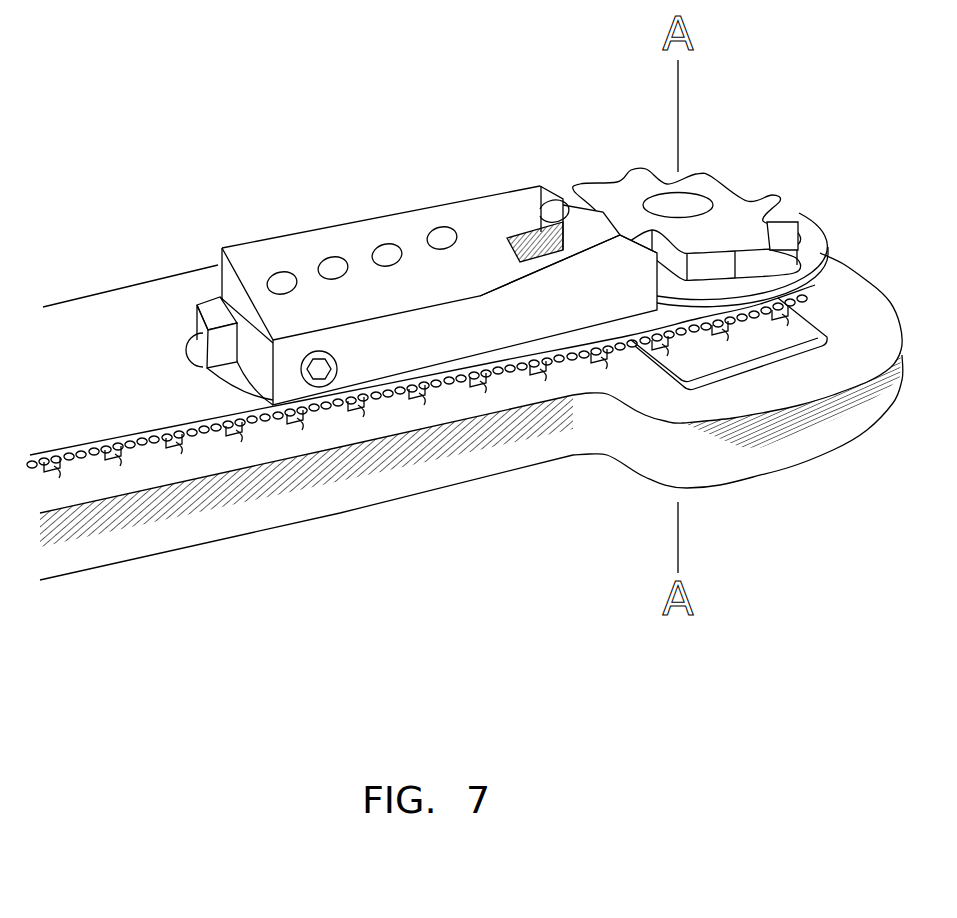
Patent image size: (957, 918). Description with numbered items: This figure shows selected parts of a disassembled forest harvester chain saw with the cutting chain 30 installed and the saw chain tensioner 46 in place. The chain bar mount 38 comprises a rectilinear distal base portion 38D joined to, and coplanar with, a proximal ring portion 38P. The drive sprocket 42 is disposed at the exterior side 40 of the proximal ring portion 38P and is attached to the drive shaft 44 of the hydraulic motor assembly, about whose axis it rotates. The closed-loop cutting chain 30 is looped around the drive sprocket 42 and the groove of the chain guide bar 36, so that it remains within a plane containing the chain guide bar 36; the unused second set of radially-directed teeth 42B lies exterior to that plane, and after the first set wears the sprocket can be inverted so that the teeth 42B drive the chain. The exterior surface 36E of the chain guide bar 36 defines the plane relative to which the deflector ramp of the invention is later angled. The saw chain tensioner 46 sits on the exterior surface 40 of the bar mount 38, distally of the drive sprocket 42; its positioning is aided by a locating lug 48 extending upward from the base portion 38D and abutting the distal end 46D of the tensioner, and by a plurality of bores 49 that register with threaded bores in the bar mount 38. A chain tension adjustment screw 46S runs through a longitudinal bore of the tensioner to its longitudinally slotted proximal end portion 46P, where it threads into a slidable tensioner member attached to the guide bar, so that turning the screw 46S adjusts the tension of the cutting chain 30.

The cutting chain 30 is at (193, 443).
The chain guide bar 36 is at (160, 337).
The exterior surface of the chain guide bar 36E is at (125, 392).
The chain bar mount 38 is at (557, 515).
The distal base portion 38D is at (390, 487).
The proximal ring portion 38P is at (780, 453).
The exterior side of the proximal ring portion 40 is at (870, 324).
The drive sprocket 42 is at (763, 165).
The second set of radially-directed teeth 42B is at (797, 228).
The drive shaft 44 is at (663, 203).
The saw chain tensioner 46 is at (477, 213).
The distal end of the chain tensioner 46D is at (253, 345).
The longitudinally slotted proximal end portion 46P is at (593, 258).
The chain tension adjustment screw 46S is at (538, 230).
The locating lug 48 is at (216, 312).
The bores 49 is at (380, 243).